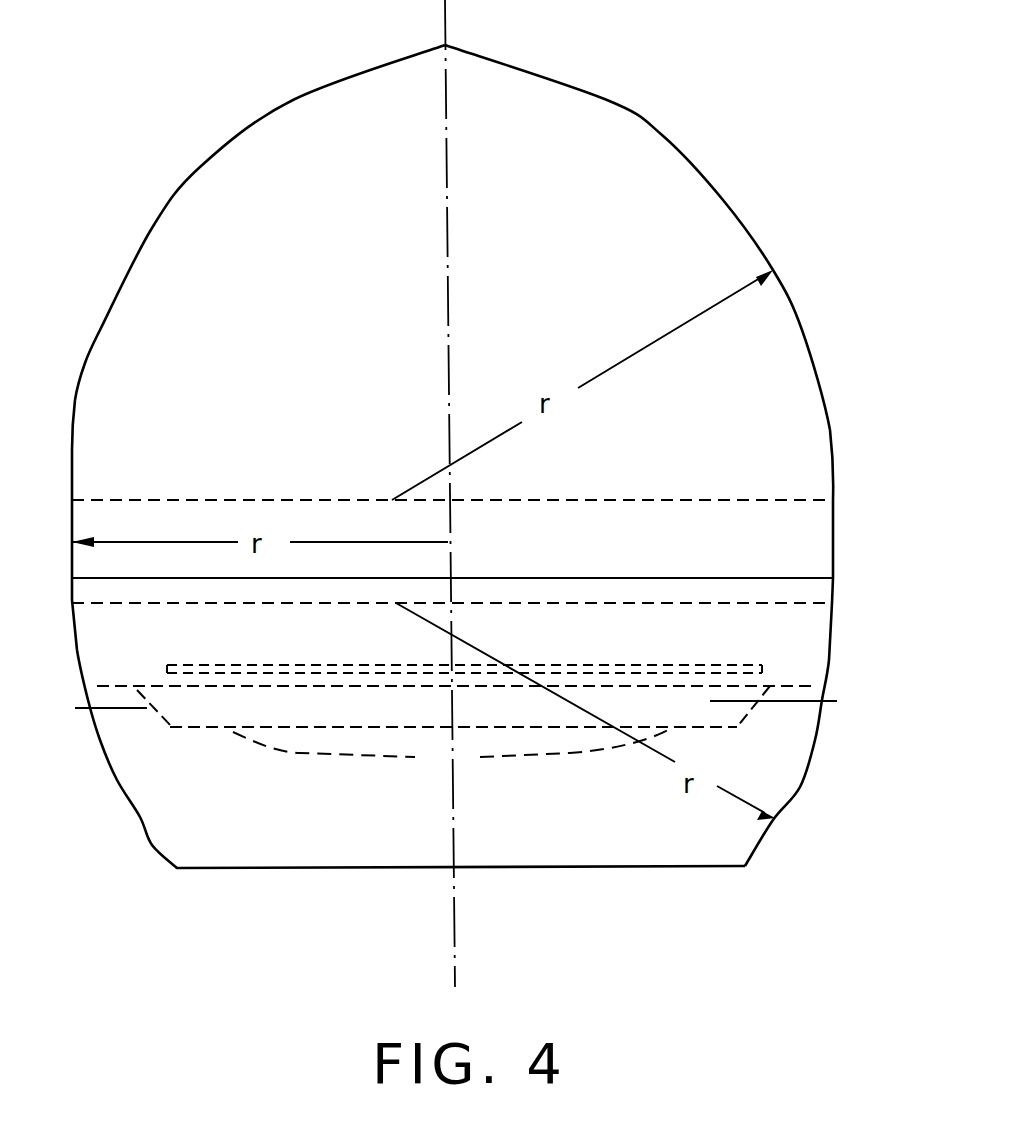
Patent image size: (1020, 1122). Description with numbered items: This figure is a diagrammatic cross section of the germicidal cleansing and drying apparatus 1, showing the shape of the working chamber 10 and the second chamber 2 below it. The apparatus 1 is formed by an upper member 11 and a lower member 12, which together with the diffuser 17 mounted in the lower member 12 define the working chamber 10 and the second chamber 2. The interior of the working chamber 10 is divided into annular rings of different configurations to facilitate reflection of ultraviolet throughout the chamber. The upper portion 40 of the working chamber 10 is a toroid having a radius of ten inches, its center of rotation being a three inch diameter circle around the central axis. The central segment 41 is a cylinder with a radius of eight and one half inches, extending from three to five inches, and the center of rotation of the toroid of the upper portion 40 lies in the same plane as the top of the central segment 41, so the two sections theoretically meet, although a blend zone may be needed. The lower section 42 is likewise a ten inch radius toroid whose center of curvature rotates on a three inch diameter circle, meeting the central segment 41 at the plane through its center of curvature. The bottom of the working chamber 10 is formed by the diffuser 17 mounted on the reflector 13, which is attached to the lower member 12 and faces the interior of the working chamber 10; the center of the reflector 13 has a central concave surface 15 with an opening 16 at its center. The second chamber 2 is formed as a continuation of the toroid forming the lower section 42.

The germicidal cleansing and drying apparatus 1 is at (484, 465).
The second chamber 2 is at (647, 834).
The working chamber 10 is at (308, 332).
The upper member 11 is at (816, 341).
The lower member 12 is at (812, 738).
The reflector 13 is at (283, 725).
The central concave surface 15 is at (302, 754).
The opening 16 is at (477, 755).
The diffuser 17 is at (326, 664).
The upper portion 40 is at (475, 235).
The central segment 41 is at (846, 543).
The lower section 42 is at (463, 770).